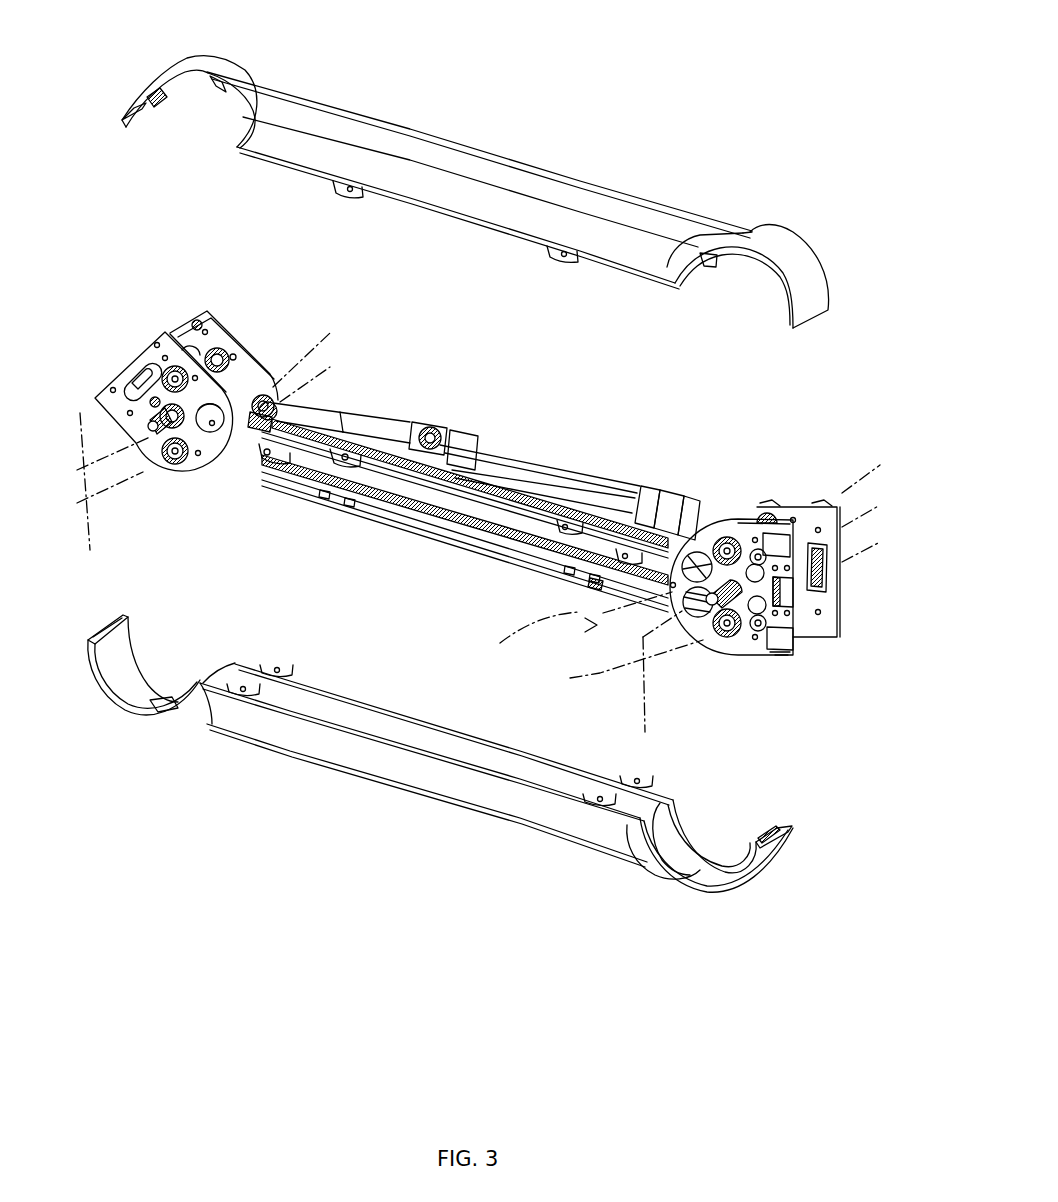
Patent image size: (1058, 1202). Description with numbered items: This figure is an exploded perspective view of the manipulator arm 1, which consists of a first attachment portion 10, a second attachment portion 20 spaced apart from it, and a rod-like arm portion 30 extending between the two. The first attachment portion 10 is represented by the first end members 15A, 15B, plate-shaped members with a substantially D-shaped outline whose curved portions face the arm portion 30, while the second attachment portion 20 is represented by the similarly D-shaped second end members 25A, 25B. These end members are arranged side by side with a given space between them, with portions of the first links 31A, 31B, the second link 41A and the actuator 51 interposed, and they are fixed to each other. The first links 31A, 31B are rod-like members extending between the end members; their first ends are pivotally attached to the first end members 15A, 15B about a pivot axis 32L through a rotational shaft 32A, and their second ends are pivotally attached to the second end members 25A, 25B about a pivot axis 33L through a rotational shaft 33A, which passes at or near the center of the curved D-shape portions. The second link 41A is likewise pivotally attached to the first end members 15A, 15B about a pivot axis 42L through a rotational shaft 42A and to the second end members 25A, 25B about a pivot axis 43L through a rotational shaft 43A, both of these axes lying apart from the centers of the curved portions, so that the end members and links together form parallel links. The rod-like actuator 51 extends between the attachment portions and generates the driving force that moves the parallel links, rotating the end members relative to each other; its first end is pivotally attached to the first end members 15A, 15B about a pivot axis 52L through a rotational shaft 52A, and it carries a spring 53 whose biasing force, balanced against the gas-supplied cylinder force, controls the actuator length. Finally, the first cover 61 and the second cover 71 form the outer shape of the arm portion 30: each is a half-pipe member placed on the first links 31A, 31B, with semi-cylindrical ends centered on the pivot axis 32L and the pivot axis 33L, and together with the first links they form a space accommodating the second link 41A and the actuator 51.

The manipulator arm 1 is at (760, 76).
The first attachment portion 10 is at (743, 977).
The second attachment portion 20 is at (134, 844).
The arm portion 30 is at (439, 904).
The first cover 61 is at (442, 156).
The second cover 71 is at (347, 758).
The second end member 25A is at (160, 333).
The second end member 25B is at (207, 311).
The first link 31A is at (452, 500).
The first link 31B is at (250, 392).
The rotational shaft 33A is at (127, 387).
The pivot axis 33L is at (97, 443).
The rotational shaft 43A is at (170, 466).
The pivot axis 43L is at (89, 500).
The spring 53 is at (378, 420).
The actuator 51 is at (566, 482).
The rotational shaft 52A is at (765, 517).
The pivot axis 52L is at (562, 626).
The first end member 15B is at (800, 505).
The first end member 15A is at (776, 650).
The rotational shaft 32A is at (838, 590).
The pivot axis 32L is at (619, 669).
The second link 41A is at (503, 562).
The rotational shaft 42A is at (728, 637).
The pivot axis 42L is at (652, 684).